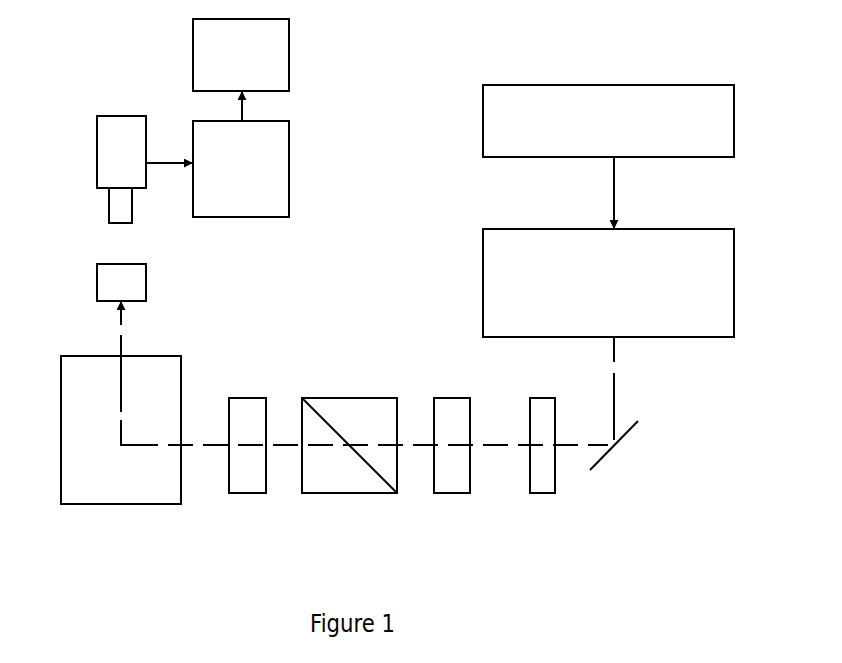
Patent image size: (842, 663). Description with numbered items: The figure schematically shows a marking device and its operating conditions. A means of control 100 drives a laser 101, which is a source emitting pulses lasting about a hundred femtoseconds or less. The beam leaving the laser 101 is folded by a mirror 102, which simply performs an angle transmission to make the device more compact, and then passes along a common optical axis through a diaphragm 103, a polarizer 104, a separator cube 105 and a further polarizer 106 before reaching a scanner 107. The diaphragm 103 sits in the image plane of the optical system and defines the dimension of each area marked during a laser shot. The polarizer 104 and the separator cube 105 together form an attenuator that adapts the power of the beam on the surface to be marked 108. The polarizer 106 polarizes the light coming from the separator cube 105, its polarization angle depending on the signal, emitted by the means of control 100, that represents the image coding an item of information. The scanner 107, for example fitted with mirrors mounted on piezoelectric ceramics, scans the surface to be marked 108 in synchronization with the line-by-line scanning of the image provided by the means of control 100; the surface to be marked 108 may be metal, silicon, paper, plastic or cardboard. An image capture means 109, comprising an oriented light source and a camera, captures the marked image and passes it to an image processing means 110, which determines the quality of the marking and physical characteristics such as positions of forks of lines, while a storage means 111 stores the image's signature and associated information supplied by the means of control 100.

The means of control 100 is at (495, 120).
The laser 101 is at (495, 278).
The mirror 102 is at (627, 437).
The diaphragm 103 is at (543, 482).
The polarizer 104 is at (446, 482).
The separator cube 105 is at (325, 482).
The polarizer 106 is at (242, 482).
The scanner 107 is at (78, 493).
The surface to be marked 108 is at (120, 275).
The image capture means 109 is at (111, 162).
The image processing means 110 is at (240, 200).
The storage means 111 is at (218, 31).